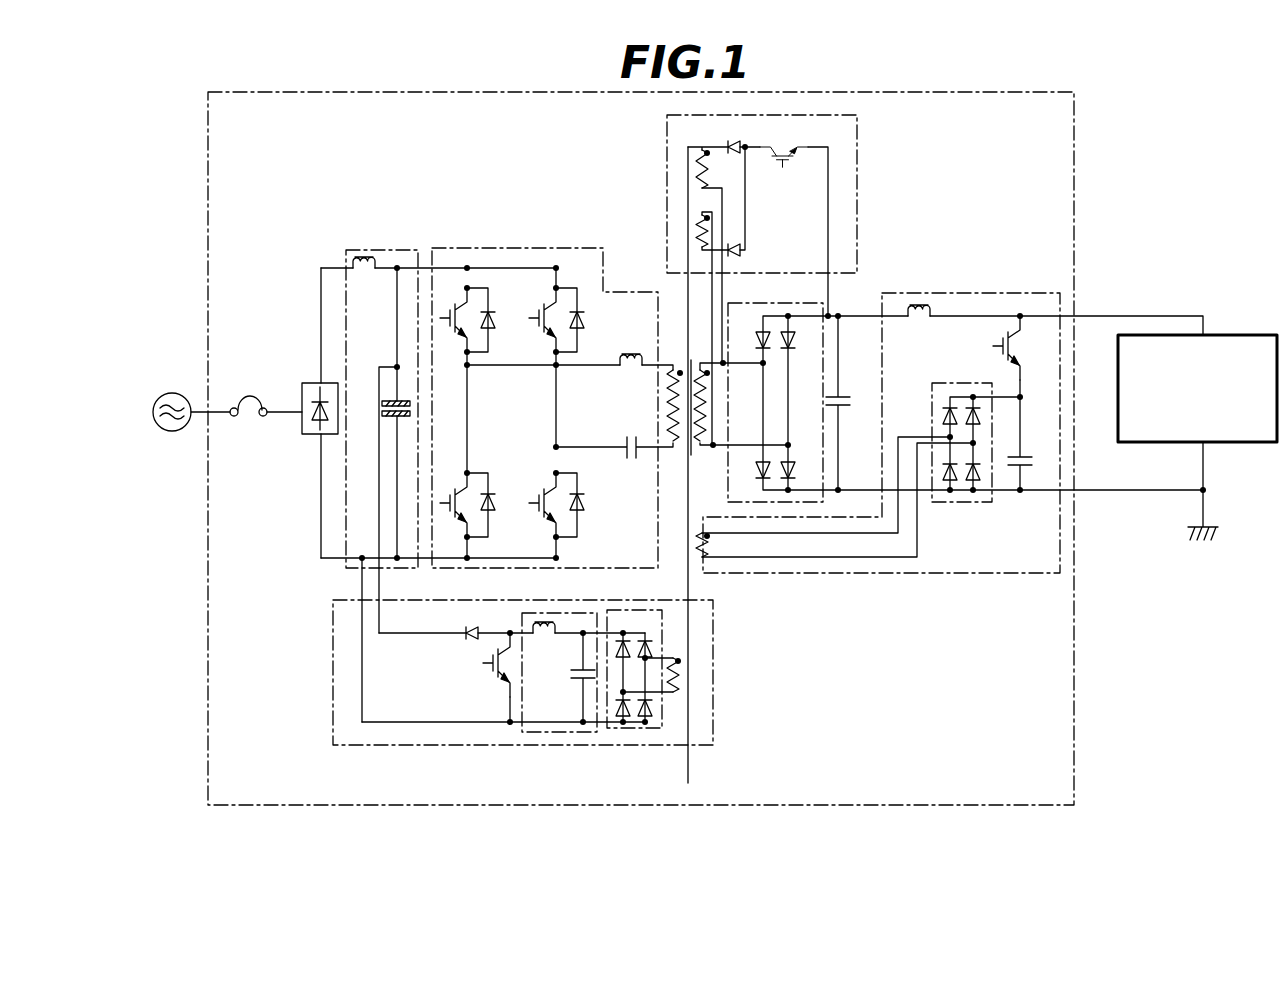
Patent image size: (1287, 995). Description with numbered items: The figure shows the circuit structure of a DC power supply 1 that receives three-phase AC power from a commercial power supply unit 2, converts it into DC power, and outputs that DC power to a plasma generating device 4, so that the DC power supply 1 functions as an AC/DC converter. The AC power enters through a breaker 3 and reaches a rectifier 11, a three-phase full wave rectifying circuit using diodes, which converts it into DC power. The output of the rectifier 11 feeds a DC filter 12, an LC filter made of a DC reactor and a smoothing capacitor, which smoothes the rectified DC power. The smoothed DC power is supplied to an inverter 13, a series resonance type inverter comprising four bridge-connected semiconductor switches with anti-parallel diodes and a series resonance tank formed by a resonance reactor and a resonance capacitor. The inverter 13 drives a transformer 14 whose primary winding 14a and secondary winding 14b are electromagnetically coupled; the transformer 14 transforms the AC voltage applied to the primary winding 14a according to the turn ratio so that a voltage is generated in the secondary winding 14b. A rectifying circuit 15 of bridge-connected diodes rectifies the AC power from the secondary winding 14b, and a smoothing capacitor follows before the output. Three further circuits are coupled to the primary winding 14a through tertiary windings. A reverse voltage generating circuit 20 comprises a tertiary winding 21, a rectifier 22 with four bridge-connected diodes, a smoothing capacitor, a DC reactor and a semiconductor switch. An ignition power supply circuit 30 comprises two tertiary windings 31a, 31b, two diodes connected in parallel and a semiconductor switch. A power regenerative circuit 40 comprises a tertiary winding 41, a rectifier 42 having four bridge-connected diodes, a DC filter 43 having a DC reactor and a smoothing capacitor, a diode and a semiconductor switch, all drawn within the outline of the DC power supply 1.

The DC power supply 1 is at (1075, 117).
The commercial power supply unit 2 is at (172, 433).
The breaker 3 is at (248, 423).
The plasma generating device 4 is at (1253, 334).
The rectifier 11 is at (311, 383).
The DC filter 12 is at (388, 248).
The inverter 13 is at (507, 248).
The transformer 14 is at (702, 465).
The primary winding 14a is at (673, 367).
The secondary winding 14b is at (700, 368).
The rectifying circuit 15 is at (784, 502).
The reverse voltage generating circuit 20 is at (949, 469).
The tertiary winding 21 is at (698, 562).
The rectifier 22 is at (960, 503).
The ignition power supply circuit 30 is at (770, 280).
The tertiary winding 31a is at (699, 242).
The tertiary winding 31b is at (696, 218).
The power regenerative circuit 40 is at (548, 705).
The tertiary winding 41 is at (693, 680).
The rectifier 42 is at (635, 729).
The DC filter 43 is at (555, 733).